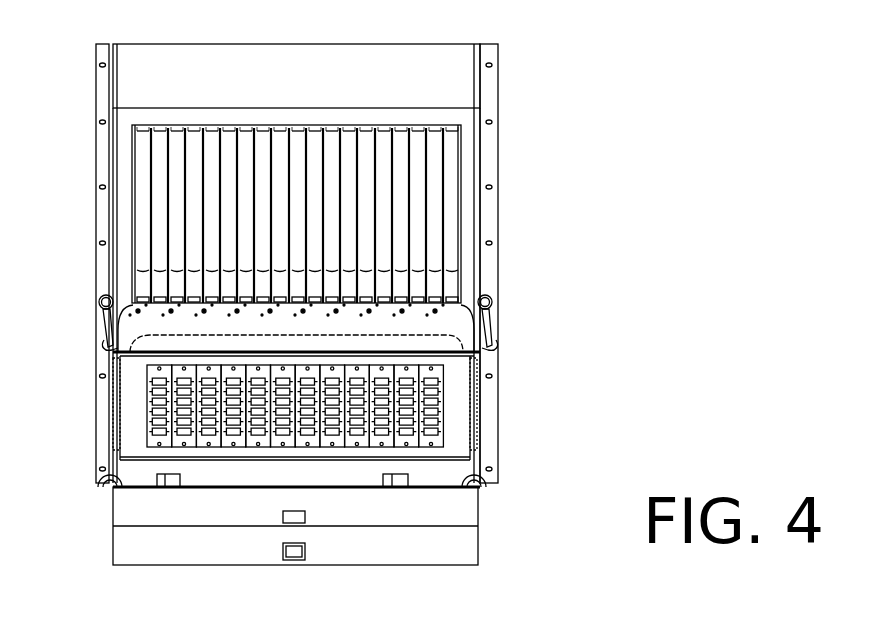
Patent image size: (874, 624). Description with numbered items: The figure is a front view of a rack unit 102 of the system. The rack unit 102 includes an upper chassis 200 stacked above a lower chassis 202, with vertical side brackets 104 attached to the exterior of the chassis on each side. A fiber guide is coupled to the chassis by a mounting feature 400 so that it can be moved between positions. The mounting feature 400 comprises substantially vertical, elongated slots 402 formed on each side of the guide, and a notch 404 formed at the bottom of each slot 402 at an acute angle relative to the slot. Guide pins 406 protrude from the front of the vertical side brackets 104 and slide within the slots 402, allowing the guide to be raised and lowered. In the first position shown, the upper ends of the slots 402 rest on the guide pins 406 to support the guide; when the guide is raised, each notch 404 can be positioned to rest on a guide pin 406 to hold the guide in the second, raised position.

The rack unit 102 is at (588, 161).
The vertical side brackets 104 is at (493, 108).
The upper chassis 200 is at (316, 87).
The lower chassis 202 is at (433, 473).
The mounting feature 400 is at (80, 319).
The elongated slots 402 is at (496, 314).
The notch 404 is at (486, 352).
The guide pins 406 is at (493, 297).